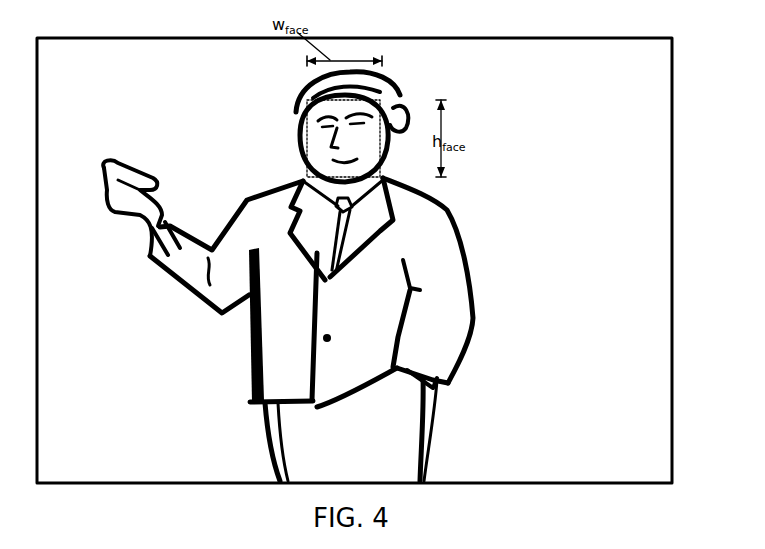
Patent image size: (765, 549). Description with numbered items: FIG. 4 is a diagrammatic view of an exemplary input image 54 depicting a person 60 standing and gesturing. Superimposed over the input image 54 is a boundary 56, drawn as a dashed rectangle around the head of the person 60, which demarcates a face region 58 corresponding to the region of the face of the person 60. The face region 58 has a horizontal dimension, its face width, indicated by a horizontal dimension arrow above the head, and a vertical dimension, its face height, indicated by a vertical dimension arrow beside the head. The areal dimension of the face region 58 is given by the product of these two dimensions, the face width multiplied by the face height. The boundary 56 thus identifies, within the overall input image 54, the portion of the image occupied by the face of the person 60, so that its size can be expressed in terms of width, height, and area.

The input image 54 is at (672, 122).
The boundary 56 is at (300, 140).
The face region 58 is at (318, 147).
The person 60 is at (272, 340).